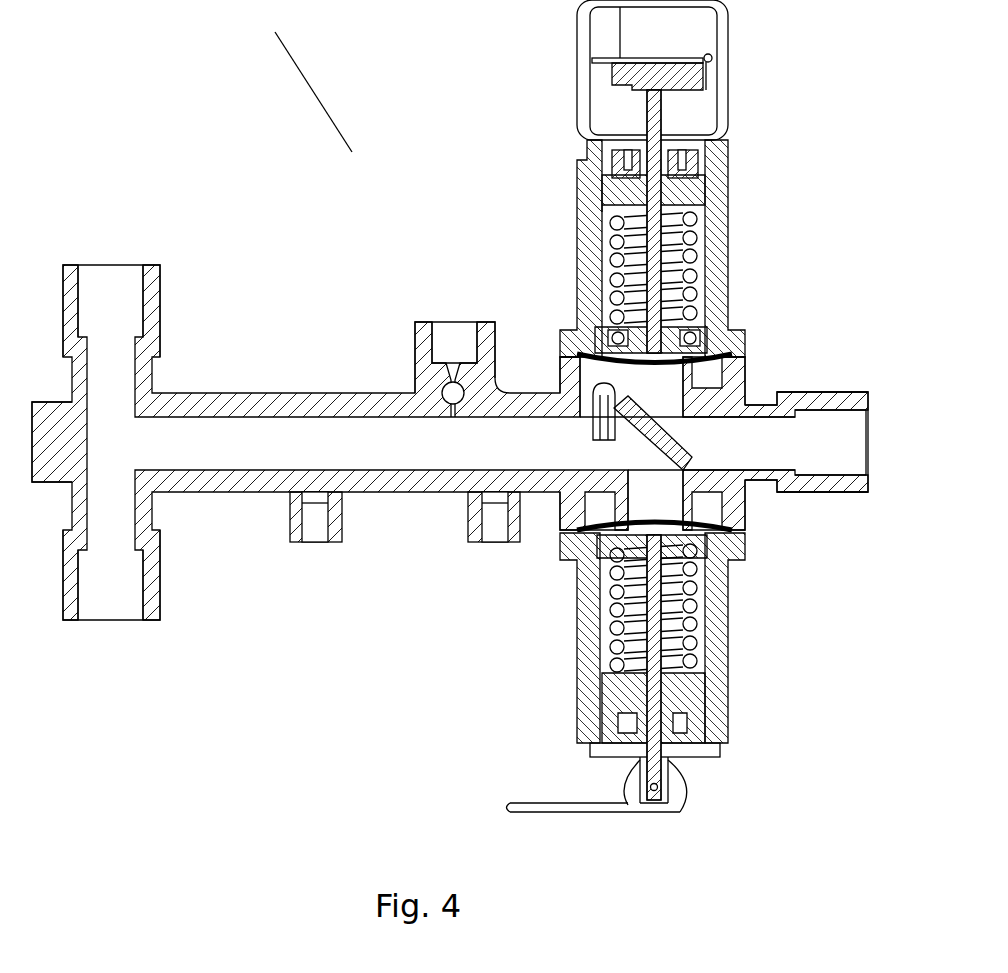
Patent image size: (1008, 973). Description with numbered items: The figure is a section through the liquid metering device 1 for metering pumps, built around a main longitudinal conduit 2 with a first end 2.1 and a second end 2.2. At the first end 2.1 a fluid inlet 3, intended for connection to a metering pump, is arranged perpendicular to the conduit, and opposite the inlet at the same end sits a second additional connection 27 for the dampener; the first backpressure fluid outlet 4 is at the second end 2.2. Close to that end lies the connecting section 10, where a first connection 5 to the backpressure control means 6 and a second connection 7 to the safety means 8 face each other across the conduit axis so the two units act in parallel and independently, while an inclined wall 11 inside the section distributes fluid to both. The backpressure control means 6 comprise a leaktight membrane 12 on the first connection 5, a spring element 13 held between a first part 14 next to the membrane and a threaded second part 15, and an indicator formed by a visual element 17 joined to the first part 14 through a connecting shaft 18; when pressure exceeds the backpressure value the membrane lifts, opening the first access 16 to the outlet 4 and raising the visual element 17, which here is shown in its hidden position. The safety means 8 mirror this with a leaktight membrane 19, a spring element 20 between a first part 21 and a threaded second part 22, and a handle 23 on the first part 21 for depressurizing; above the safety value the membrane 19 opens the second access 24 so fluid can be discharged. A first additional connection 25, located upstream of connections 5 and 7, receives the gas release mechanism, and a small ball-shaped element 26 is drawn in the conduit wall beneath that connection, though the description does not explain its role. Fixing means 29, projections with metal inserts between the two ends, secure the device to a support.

The liquid metering device 1 is at (302, 76).
The main longitudinal conduit 2 is at (372, 480).
The first end 2.1 is at (80, 458).
The second end 2.2 is at (835, 392).
The fluid inlet 3 is at (105, 620).
The first backpressure fluid outlet 4 is at (868, 440).
The first connection 5 is at (568, 345).
The backpressure control means 6 is at (720, 190).
The second connection 7 is at (575, 545).
The safety means 8 is at (580, 680).
The connecting section 10 is at (712, 432).
The inclined wall 11 is at (653, 433).
The leaktight membrane 12 is at (722, 335).
The spring element 13 is at (703, 240).
The first part 14 is at (695, 302).
The second part 15 is at (605, 185).
The first access 16 is at (652, 378).
The visual element 17 is at (640, 62).
The connecting shaft 18 is at (648, 120).
The leaktight membrane 19 is at (585, 630).
The spring element 20 is at (672, 630).
The first part 21 is at (708, 556).
The second part 22 is at (677, 698).
The handle 23 is at (600, 815).
The second access 24 is at (655, 510).
The first additional connection 25 is at (428, 340).
The ball 26 is at (448, 388).
The second additional connection 27 is at (150, 310).
The fixing means 29 is at (290, 517).